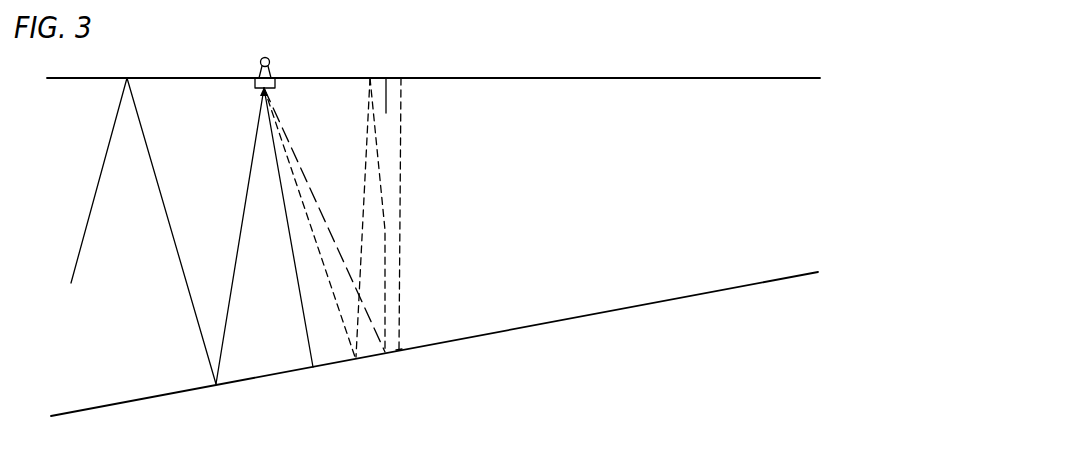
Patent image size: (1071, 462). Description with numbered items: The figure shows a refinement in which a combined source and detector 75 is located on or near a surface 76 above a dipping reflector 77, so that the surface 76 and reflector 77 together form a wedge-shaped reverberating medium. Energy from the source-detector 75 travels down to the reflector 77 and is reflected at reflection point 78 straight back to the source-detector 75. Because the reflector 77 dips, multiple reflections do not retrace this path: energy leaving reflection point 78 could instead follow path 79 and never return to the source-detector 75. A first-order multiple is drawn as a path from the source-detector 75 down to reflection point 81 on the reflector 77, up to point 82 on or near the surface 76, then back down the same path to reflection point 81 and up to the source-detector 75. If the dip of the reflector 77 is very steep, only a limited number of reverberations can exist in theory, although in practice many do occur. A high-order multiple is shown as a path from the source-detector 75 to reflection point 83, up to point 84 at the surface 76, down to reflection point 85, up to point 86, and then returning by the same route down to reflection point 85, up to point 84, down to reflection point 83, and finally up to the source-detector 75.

The combined source and detector 75 is at (274, 77).
The surface 76 is at (589, 79).
The reflector 77 is at (647, 304).
The reflection point 78 is at (313, 369).
The path 79 is at (248, 185).
The reflection point 81 is at (385, 353).
The point 82 is at (387, 78).
The reflection point 83 is at (355, 359).
The point 84 is at (375, 50).
The reflection point 85 is at (399, 349).
The point 86 is at (402, 78).